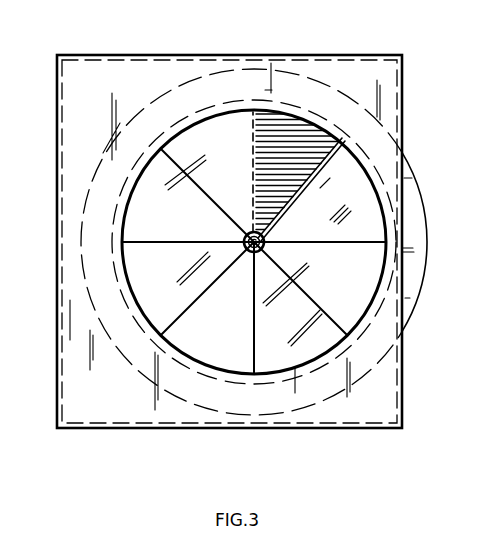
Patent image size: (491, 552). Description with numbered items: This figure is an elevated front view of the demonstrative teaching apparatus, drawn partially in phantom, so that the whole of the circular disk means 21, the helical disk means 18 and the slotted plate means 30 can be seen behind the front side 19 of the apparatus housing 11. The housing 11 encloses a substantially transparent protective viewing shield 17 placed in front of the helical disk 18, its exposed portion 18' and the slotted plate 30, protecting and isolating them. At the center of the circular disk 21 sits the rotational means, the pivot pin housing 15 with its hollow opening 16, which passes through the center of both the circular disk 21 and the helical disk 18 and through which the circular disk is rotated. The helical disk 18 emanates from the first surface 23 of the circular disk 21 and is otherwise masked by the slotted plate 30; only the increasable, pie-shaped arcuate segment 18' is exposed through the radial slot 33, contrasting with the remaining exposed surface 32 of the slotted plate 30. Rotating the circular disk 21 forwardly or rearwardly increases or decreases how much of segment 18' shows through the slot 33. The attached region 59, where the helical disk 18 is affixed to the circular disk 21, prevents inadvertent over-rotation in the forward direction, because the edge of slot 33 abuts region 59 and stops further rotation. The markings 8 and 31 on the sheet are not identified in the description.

The section marker 8 is at (106, 388).
The apparatus housing means 11 is at (405, 67).
The pivot pin housing 15 is at (262, 237).
The hollow opening 16 is at (252, 250).
The transparent viewing shield 17 is at (288, 346).
The helical disk means 18 is at (285, 242).
The increasable arcuate segment 18' is at (335, 80).
The front side 19 is at (385, 424).
The circular disk means 21 is at (427, 267).
The first surface 23 is at (410, 228).
The slotted plate means 30 is at (326, 412).
The ring portion 31 is at (283, 367).
The remaining exposed surface 32 is at (183, 155).
The radial slot 33 is at (310, 133).
The attached region 59 is at (243, 115).